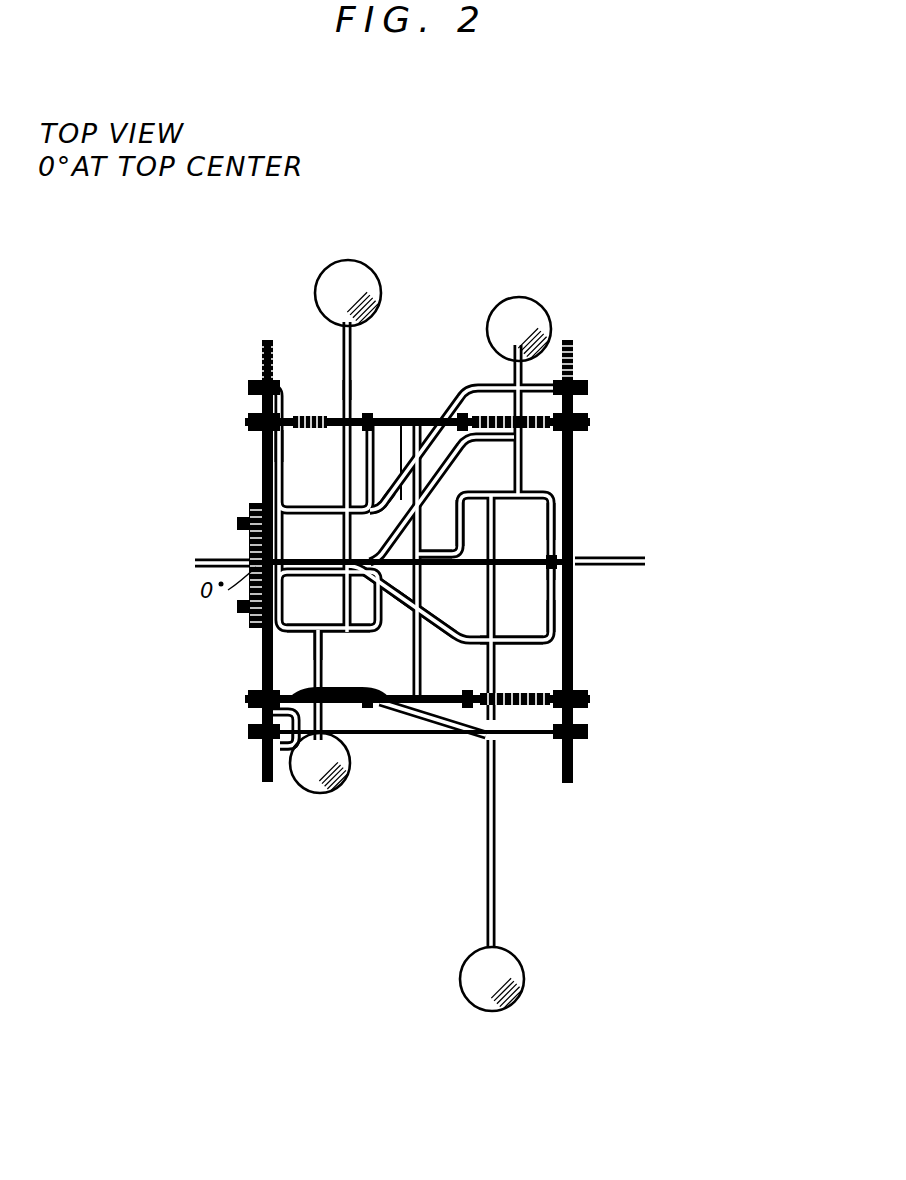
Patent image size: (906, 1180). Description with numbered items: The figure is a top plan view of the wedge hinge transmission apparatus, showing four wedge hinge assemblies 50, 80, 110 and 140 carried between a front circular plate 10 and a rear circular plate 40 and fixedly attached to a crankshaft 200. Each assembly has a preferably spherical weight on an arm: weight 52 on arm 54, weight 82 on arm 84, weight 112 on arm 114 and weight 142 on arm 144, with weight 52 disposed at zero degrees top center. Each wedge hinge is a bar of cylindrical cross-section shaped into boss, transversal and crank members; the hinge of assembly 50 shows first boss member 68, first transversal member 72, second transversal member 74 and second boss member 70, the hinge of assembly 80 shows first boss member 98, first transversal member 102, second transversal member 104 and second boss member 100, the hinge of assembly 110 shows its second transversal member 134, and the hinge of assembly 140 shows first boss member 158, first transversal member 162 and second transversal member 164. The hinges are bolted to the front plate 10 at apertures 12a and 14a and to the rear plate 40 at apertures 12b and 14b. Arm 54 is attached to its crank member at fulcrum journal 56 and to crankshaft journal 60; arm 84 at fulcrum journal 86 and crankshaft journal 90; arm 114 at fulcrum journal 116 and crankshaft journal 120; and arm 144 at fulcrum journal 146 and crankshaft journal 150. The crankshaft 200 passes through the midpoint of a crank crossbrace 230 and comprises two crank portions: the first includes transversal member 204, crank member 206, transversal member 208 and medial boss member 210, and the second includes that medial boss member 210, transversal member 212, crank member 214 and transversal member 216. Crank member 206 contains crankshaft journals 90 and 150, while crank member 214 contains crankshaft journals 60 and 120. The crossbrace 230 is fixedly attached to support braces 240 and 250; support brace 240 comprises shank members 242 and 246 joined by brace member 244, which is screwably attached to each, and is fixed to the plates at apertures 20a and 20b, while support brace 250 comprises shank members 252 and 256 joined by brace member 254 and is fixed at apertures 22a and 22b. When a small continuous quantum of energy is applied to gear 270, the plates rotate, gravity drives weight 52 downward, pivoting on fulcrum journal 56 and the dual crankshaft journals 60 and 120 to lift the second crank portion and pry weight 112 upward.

The front circular plate 10 is at (266, 358).
The aperture 12a is at (268, 384).
The aperture 12b is at (570, 382).
The aperture 14a is at (268, 740).
The aperture 14b is at (571, 734).
The aperture 20a is at (247, 418).
The aperture 20b is at (580, 431).
The aperture 22a is at (254, 691).
The aperture 22b is at (563, 708).
The rear circular plate 40 is at (573, 767).
The wedge hinge assembly 50 is at (480, 862).
The spherical weight 52 is at (513, 997).
The arm 54 is at (497, 903).
The fulcrum journal 56 is at (499, 643).
The crankshaft journal 60 is at (505, 503).
The first boss member 68 is at (322, 565).
The second boss member 70 is at (557, 567).
The first transversal member 72 is at (462, 650).
The second transversal member 74 is at (565, 625).
The wedge hinge assembly 80 is at (290, 660).
The spherical weight 82 is at (319, 788).
The arm 84 is at (323, 725).
The fulcrum journal 86 is at (306, 692).
The crankshaft journal 90 is at (322, 636).
The first boss member 98 is at (290, 760).
The second boss member 100 is at (497, 735).
The first transversal member 102 is at (278, 720).
The second transversal member 104 is at (443, 708).
The wedge hinge assembly 110 is at (520, 406).
The spherical weight 112 is at (541, 312).
The arm 114 is at (538, 366).
The fulcrum journal 116 is at (512, 444).
The crankshaft journal 120 is at (535, 500).
The second transversal member 134 is at (565, 479).
The wedge hinge assembly 140 is at (357, 356).
The spherical weight 142 is at (330, 270).
The arm 144 is at (356, 390).
The fulcrum journal 146 is at (356, 500).
The crankshaft journal 150 is at (382, 647).
The first boss member 158 is at (284, 399).
The first transversal member 162 is at (280, 484).
The second transversal member 164 is at (448, 396).
The crankshaft 200 is at (196, 564).
The transversal member 204 is at (258, 636).
The crank member 206 is at (334, 630).
The transversal member 208 is at (430, 616).
The medial boss member 210 is at (438, 562).
The transversal member 212 is at (458, 518).
The crank member 214 is at (494, 568).
The transversal member 216 is at (562, 530).
The crank crossbrace 230 is at (422, 591).
The support brace 240 is at (320, 414).
The shank member 242 is at (279, 448).
The brace member 244 is at (403, 430).
The shank member 246 is at (487, 416).
The support brace 250 is at (398, 706).
The shank member 252 is at (293, 686).
The brace member 254 is at (448, 707).
The shank member 256 is at (531, 698).
The gear 270 is at (249, 508).